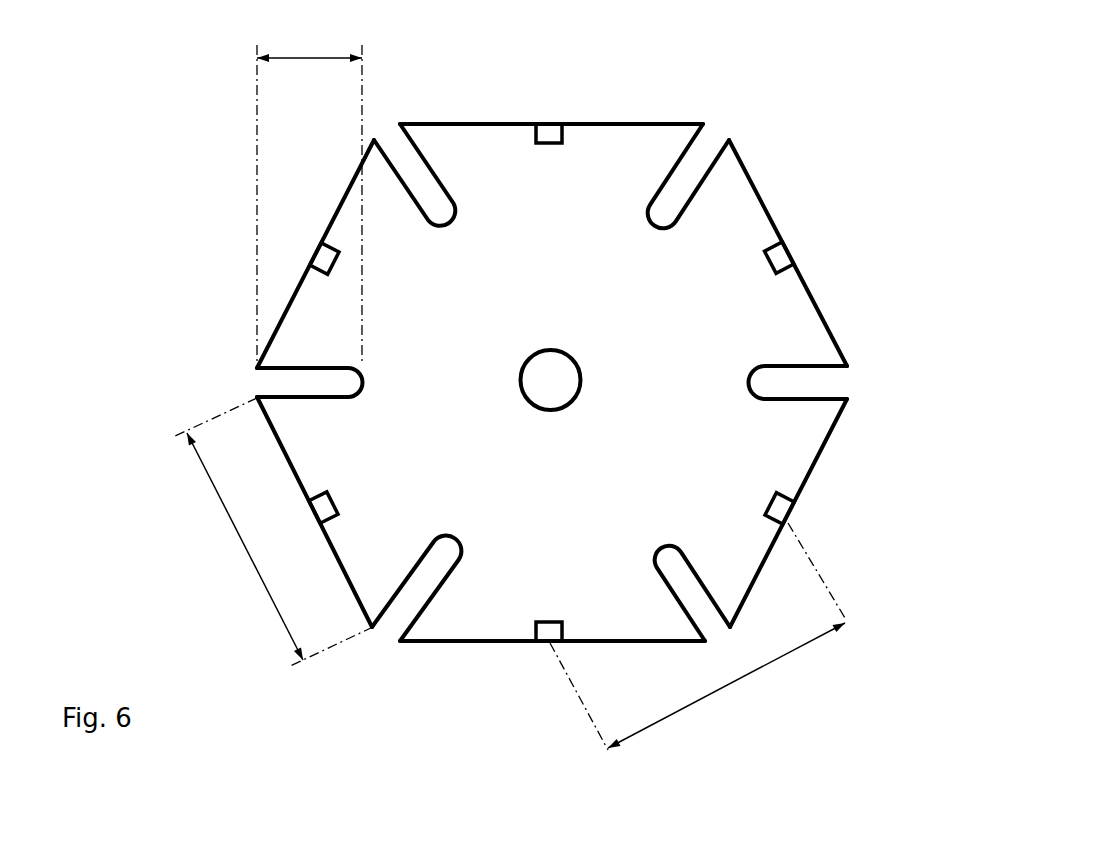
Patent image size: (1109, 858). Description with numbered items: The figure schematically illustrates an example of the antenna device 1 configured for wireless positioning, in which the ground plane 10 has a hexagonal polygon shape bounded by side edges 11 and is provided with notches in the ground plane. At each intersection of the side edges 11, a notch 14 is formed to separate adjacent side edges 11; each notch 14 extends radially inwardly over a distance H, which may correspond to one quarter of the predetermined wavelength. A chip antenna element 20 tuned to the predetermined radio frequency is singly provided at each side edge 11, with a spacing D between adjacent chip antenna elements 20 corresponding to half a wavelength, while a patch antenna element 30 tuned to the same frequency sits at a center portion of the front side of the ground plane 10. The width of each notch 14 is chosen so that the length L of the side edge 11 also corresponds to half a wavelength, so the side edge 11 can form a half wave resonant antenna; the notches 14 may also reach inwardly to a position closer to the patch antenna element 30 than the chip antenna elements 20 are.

The antenna device 1 is at (117, 117).
The ground plane 10 is at (599, 340).
The side edge 11 is at (771, 187).
The notch 14 is at (834, 382).
The chip antenna element 20 is at (792, 247).
The patch antenna element 30 is at (563, 373).